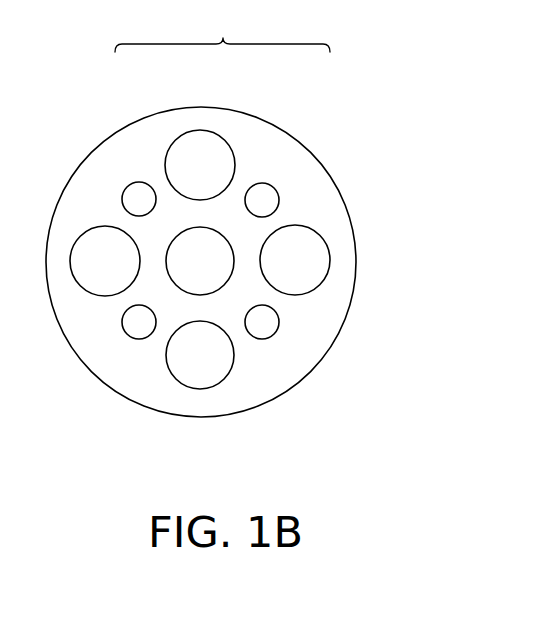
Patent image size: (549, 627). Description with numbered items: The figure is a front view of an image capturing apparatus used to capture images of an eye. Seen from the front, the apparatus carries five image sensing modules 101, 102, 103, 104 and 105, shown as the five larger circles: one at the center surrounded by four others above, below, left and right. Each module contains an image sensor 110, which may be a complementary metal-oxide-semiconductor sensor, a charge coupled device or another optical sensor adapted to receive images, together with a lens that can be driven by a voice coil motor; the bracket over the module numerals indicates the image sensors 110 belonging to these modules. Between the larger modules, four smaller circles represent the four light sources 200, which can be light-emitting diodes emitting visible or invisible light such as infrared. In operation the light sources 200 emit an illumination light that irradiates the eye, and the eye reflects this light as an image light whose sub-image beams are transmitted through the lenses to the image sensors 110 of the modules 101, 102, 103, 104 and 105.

The image sensor 110 is at (200, 196).
The image sensing module 101 is at (208, 335).
The image sensing module 102 is at (188, 240).
The image sensing module 103 is at (178, 153).
The image sensing module 104 is at (80, 247).
The image sensing module 105 is at (303, 240).
The light source 200 is at (143, 203).